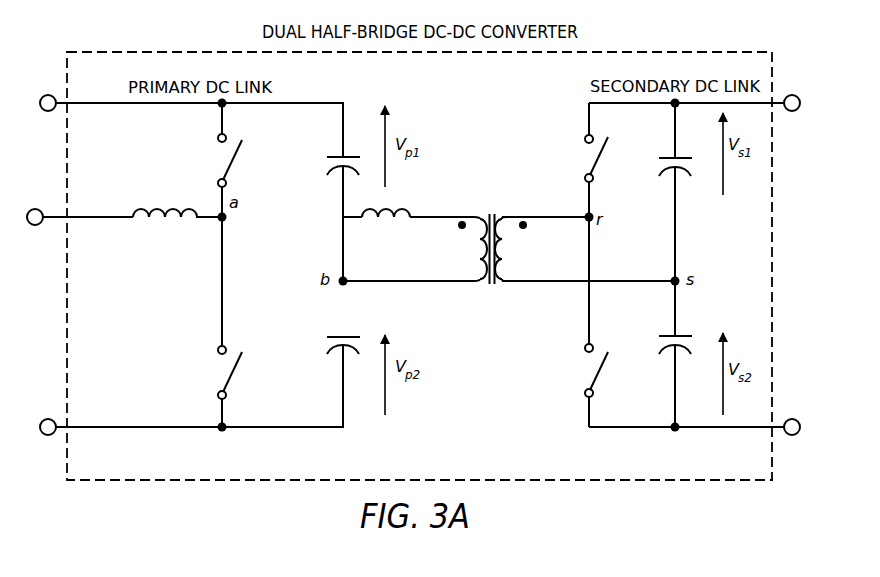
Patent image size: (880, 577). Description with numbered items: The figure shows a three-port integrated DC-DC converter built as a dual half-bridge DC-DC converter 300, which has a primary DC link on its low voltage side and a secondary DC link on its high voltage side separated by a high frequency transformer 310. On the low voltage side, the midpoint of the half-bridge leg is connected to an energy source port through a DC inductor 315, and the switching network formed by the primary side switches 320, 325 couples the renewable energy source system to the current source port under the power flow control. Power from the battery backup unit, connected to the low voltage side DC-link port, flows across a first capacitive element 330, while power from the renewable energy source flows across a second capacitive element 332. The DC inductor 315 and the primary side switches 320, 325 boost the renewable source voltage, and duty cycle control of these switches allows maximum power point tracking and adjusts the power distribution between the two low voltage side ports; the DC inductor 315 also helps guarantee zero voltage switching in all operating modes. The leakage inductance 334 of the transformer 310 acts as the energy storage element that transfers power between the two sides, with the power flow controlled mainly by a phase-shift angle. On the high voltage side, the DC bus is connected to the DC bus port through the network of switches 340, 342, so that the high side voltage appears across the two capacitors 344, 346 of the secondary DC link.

The dual half-bridge DC-DC converter 300 is at (706, 51).
The high frequency transformer 310 is at (499, 211).
The DC inductor 315 is at (133, 203).
The primary side switch 320 is at (243, 151).
The primary side switch 325 is at (233, 374).
The first capacitive element 330 is at (357, 157).
The second capacitive element 332 is at (347, 335).
The leakage inductance 334 is at (412, 214).
The switch 340 is at (602, 155).
The switch 342 is at (602, 377).
The capacitor 344 is at (690, 157).
The capacitor 346 is at (688, 335).